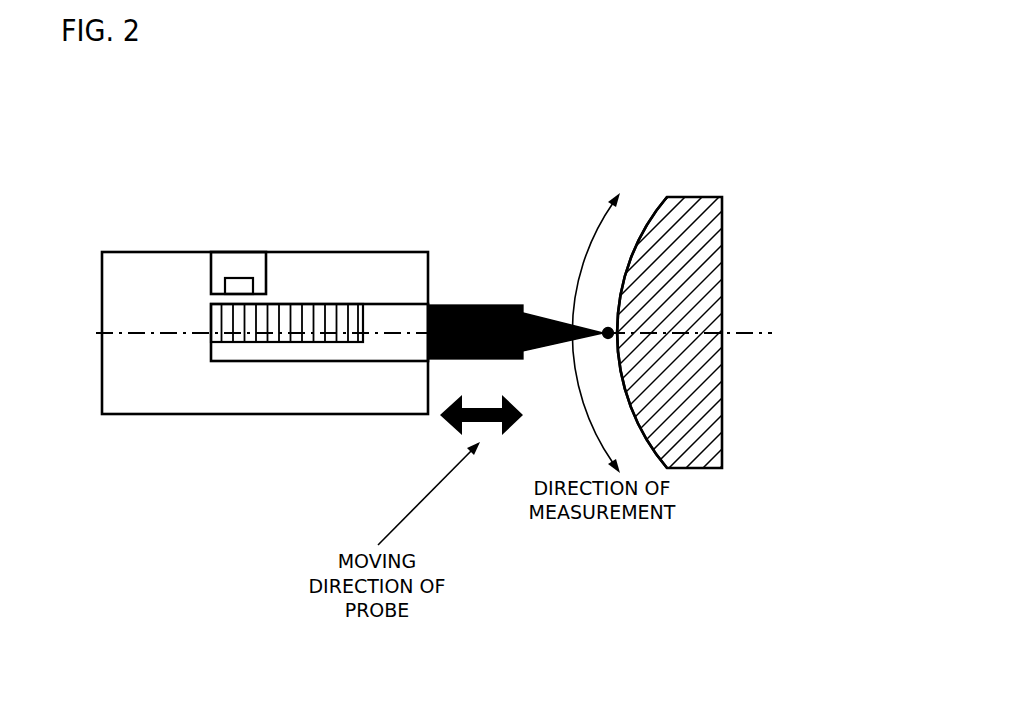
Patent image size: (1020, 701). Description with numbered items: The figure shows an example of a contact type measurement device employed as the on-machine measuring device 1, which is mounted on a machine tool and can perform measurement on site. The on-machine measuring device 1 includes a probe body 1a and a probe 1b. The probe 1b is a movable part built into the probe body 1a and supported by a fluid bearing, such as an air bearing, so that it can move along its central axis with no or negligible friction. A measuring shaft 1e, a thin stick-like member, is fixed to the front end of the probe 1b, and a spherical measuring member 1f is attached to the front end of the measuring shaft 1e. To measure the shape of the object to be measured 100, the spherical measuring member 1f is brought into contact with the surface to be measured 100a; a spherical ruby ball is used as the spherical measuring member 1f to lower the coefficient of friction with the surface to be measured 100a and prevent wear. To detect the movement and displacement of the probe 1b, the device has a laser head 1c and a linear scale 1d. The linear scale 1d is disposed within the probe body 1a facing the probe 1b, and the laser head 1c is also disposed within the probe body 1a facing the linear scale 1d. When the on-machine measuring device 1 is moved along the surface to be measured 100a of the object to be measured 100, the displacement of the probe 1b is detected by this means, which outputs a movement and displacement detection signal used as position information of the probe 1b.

The on-machine measuring device 1 is at (279, 153).
The probe body 1a is at (153, 252).
The probe 1b is at (473, 305).
The laser head 1c is at (236, 277).
The linear scale 1d is at (322, 304).
The measuring shaft 1e is at (546, 327).
The spherical measuring member 1f is at (605, 327).
The object to be measured 100 is at (690, 389).
The surface to be measured 100a is at (625, 391).